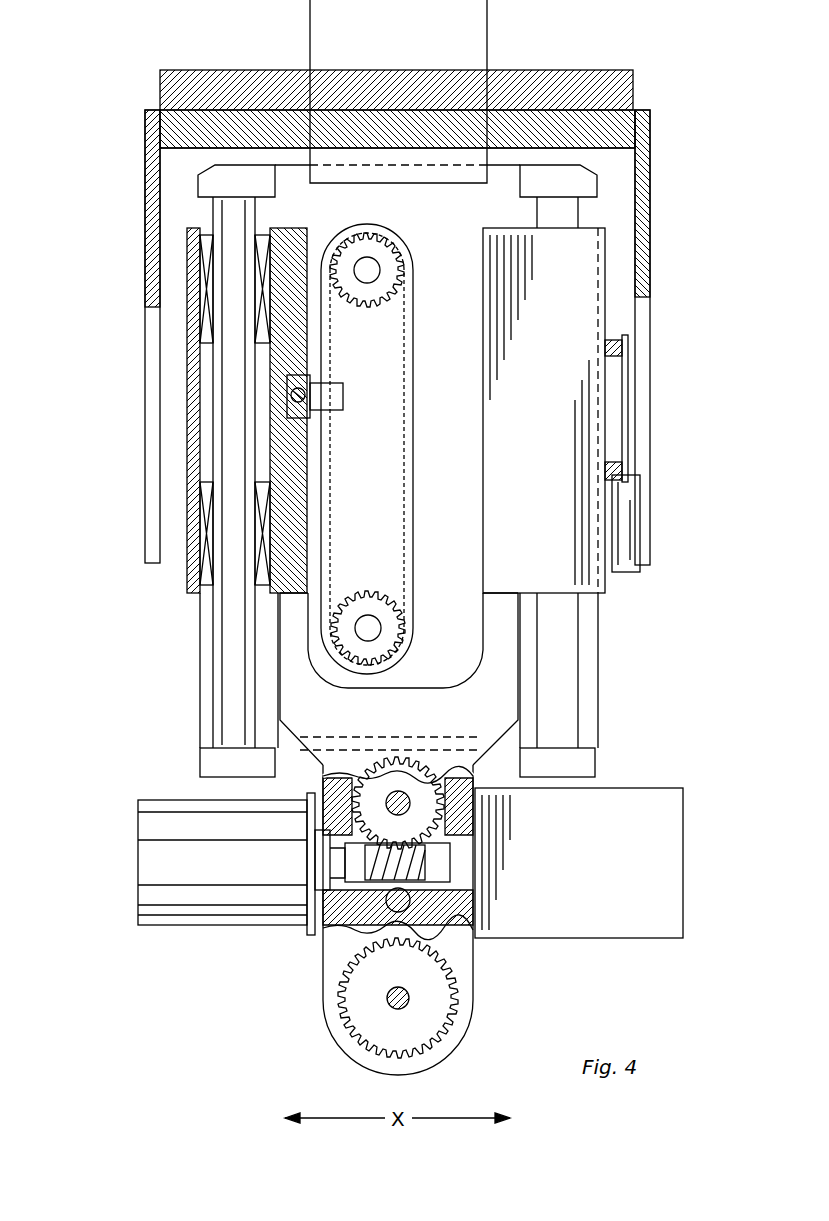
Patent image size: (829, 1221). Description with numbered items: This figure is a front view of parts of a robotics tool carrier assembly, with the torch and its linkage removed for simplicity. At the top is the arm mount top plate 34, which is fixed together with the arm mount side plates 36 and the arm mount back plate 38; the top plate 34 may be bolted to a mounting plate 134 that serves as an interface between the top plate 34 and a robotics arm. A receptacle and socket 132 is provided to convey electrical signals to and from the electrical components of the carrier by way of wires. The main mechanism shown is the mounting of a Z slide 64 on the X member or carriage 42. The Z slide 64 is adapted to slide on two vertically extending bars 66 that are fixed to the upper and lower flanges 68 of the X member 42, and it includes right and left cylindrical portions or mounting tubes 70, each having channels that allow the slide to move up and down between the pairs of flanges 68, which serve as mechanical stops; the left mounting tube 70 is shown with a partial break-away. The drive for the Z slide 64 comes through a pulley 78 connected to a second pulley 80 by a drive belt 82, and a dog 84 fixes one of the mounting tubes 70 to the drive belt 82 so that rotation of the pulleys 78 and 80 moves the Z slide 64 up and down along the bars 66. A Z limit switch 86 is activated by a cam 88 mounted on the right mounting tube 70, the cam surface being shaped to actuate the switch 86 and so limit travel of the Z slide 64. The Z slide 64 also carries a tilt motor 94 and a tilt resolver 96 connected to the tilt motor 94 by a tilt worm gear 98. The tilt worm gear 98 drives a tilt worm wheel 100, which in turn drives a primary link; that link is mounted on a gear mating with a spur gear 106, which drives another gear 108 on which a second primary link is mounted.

The arm mount top plate 34 is at (218, 118).
The mounting plate 134 is at (278, 73).
The receptacle and socket 132 is at (487, 28).
The arm mount side plates 36 is at (145, 152).
The upper and lower flanges 68 is at (200, 178).
The vertical extending bars 66 is at (580, 212).
The arm mount back plate 38 is at (187, 245).
The mounting tubes 70 is at (187, 385).
The X member or carriage 42 is at (470, 358).
The Z slide 64 is at (607, 270).
The pulley 80 is at (395, 240).
The pulley 78 is at (400, 618).
The drive belt 82 is at (410, 380).
The dog 84 is at (340, 400).
The cam 88 is at (628, 420).
The Z limit switch 86 is at (640, 520).
The tilt worm gear 98 is at (473, 950).
The tilt worm wheel 100 is at (390, 800).
The spur gear 106 is at (372, 922).
The gear 108 is at (355, 1000).
The tilt resolver 96 is at (236, 857).
The tilt motor 94 is at (591, 862).